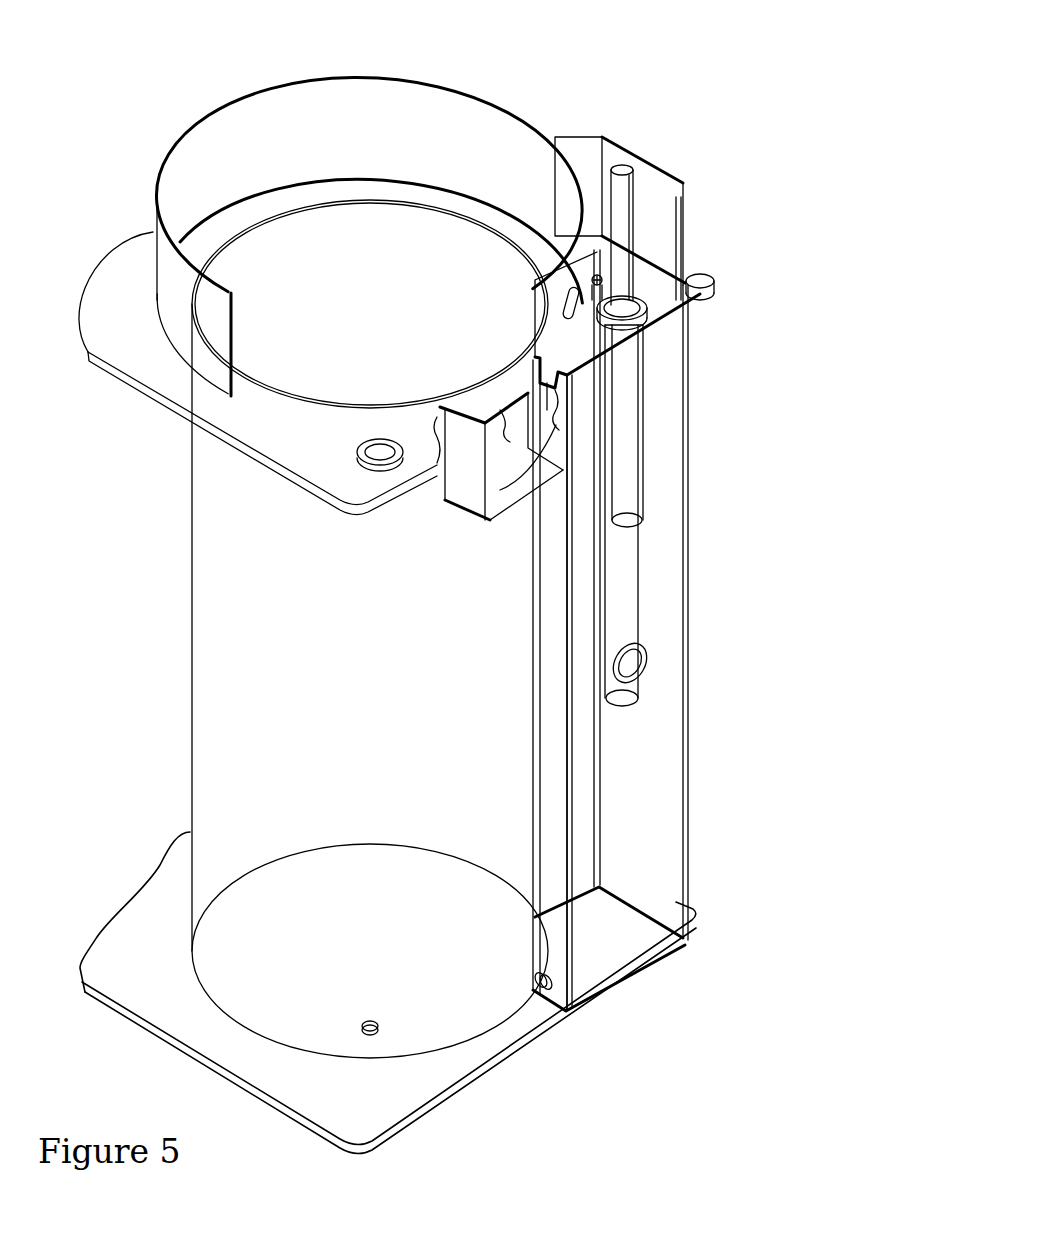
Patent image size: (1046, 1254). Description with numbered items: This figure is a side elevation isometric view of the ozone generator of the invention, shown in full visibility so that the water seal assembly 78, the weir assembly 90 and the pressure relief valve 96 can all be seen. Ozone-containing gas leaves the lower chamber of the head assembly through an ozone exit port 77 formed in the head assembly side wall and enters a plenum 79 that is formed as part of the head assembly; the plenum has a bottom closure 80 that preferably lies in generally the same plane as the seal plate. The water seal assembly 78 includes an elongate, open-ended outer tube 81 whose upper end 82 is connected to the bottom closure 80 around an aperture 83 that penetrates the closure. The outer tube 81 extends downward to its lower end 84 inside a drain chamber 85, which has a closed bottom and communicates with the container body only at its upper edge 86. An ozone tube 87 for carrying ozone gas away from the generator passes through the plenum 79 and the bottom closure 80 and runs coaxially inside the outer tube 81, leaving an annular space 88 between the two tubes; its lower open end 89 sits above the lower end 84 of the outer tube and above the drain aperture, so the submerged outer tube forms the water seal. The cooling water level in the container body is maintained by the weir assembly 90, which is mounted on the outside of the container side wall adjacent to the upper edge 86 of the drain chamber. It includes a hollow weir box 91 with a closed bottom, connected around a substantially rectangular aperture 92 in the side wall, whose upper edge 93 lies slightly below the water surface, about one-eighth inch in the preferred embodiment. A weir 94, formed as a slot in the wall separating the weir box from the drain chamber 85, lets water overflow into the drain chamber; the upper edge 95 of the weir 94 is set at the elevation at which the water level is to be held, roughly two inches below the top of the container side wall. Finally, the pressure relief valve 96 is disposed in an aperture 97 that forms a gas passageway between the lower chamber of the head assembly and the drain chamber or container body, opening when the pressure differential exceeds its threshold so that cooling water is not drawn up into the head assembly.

The ozone exit port 77 is at (578, 322).
The water seal assembly 78 is at (726, 309).
The plenum 79 is at (645, 217).
The bottom closure 80 is at (699, 268).
The outer tube 81 is at (645, 443).
The upper end 82 is at (650, 343).
The aperture 83 is at (648, 305).
The lower end 84 is at (646, 696).
The drain chamber 85 is at (645, 788).
The upper edge 86 is at (587, 357).
The ozone tube 87 is at (624, 165).
The annular space 88 is at (648, 505).
The lower open end 89 is at (630, 528).
The weir assembly 90 is at (483, 507).
The weir box 91 is at (460, 513).
The aperture 92 is at (512, 405).
The upper edge 93 is at (510, 386).
The weir 94 is at (538, 398).
The upper edge 95 is at (550, 398).
The pressure relief valve 96 is at (597, 257).
The aperture 97 is at (583, 289).